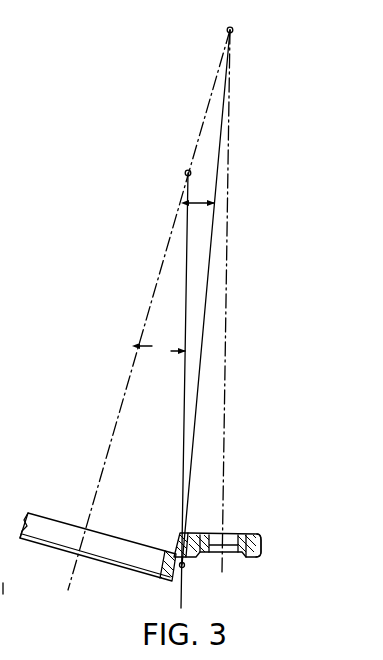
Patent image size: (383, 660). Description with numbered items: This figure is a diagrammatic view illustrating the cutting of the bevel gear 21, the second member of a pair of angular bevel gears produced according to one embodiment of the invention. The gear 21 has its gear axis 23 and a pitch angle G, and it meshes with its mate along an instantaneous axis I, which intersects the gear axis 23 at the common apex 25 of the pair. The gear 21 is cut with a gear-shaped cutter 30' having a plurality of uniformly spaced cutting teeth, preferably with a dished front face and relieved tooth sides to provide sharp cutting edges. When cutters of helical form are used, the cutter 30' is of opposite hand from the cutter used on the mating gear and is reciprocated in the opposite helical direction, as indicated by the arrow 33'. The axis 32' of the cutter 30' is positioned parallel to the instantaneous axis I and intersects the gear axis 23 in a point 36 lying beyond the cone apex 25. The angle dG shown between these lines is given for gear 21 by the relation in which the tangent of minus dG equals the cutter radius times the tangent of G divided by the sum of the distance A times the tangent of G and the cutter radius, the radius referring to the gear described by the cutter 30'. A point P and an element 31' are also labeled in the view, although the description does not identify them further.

The point 36 is at (233, 30).
The common apex 25 is at (185, 173).
The gear axis 23 is at (100, 480).
The bevel gear 21 is at (130, 557).
The point of contact P is at (185, 565).
The cutter 30' is at (223, 537).
The flange 31' is at (277, 545).
The cutter axis 32' is at (246, 301).
The arrow 33' is at (210, 297).
The instantaneous axis I is at (185, 378).
The pitch angle G is at (162, 349).
The angle offset dG is at (202, 191).